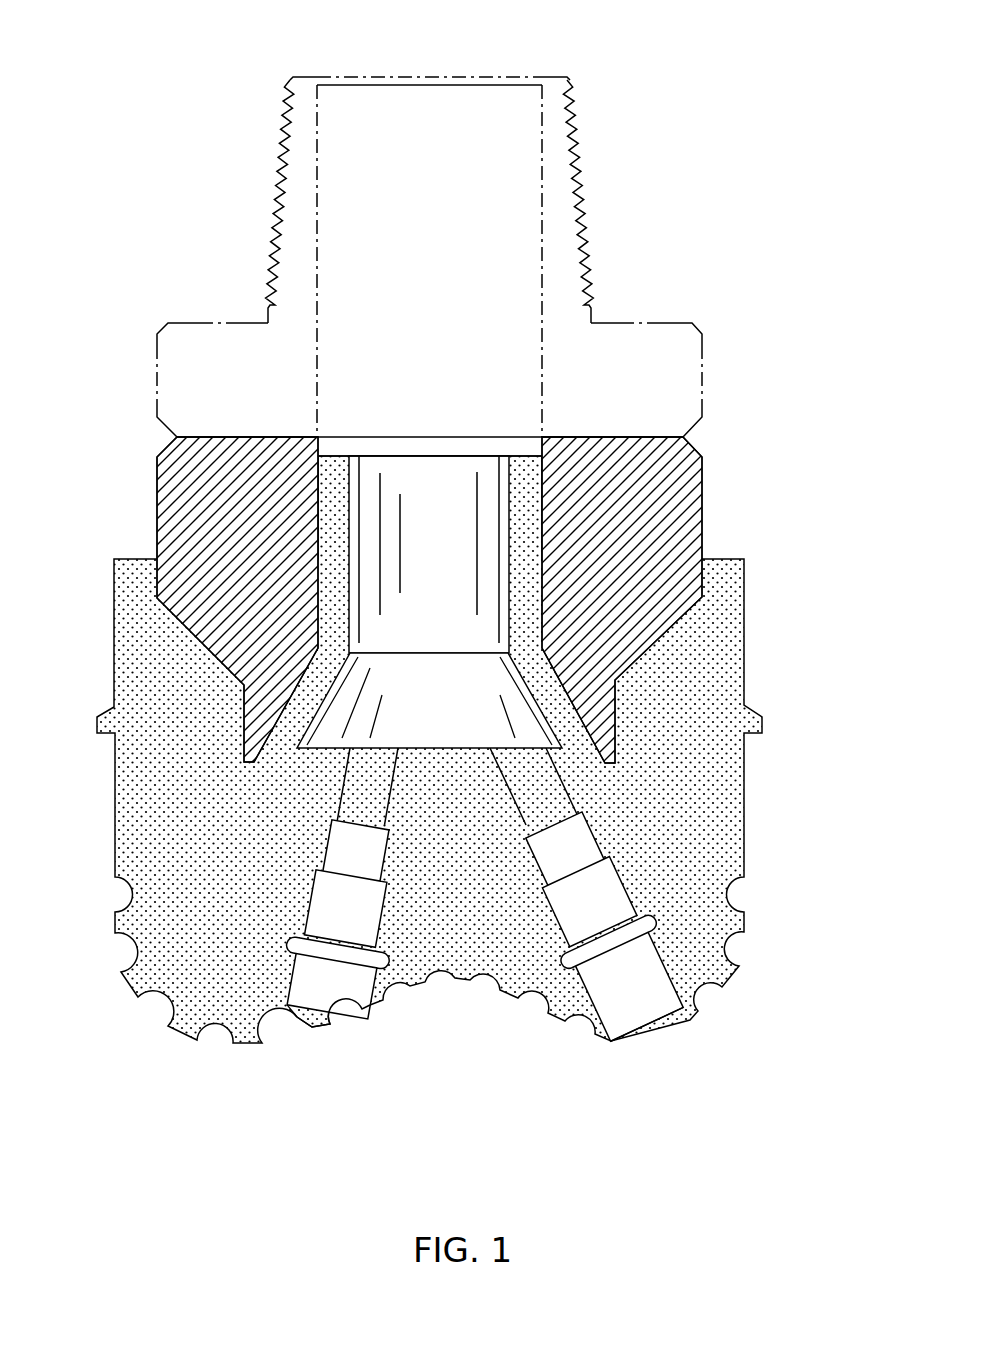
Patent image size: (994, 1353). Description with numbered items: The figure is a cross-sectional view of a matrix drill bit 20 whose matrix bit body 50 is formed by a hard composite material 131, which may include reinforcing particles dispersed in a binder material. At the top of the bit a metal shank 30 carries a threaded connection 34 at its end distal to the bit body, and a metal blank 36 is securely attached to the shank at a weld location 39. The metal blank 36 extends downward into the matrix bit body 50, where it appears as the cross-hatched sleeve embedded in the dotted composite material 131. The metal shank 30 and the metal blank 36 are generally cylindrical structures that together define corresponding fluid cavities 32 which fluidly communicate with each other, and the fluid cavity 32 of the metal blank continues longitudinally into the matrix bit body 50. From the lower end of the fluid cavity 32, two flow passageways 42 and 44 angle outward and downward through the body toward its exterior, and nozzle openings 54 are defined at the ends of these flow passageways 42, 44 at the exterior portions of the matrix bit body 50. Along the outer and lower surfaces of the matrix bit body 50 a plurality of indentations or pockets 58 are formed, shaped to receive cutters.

The matrix drill bit 20 is at (740, 45).
The metal shank 30 is at (708, 352).
The fluid cavity 32 is at (451, 232).
The threaded connection 34 is at (283, 165).
The metal blank 36 is at (634, 549).
The weld location 39 is at (158, 437).
The flow passageway 42 is at (366, 917).
The flow passageway 44 is at (604, 899).
The matrix bit body 50 is at (782, 702).
The nozzle opening 54 is at (302, 1022).
The pocket 58 is at (115, 890).
The hard composite material 131 is at (238, 864).